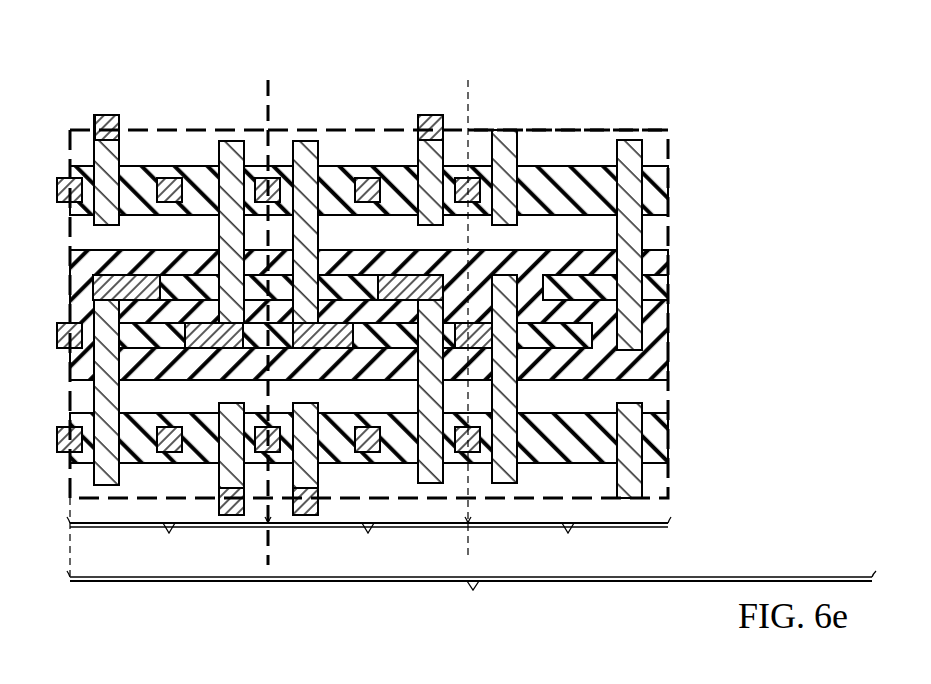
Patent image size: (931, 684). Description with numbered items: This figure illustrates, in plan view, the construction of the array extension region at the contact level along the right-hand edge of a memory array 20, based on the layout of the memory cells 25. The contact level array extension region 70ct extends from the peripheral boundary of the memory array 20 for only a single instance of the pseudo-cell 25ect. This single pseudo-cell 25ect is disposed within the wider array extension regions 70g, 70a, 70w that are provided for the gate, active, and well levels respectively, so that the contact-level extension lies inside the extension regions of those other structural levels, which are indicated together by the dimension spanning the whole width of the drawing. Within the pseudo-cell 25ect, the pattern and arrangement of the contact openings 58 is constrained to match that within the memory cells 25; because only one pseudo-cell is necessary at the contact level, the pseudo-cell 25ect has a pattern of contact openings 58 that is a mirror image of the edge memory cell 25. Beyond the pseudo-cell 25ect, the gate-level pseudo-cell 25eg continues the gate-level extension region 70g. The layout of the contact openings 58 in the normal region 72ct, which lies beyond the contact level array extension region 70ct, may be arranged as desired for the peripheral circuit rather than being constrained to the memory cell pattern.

The contact openings 58 is at (112, 115).
The memory cell 25 is at (185, 124).
The pseudo-cell 25ect is at (354, 124).
The pseudo-cell 25eg is at (569, 128).
The memory array 20 is at (169, 540).
The contact level array extension region 70ct is at (368, 542).
The normal region 72ct is at (568, 542).
The gate level array extension region 70g is at (471, 596).
The active level array extension region 70a is at (471, 599).
The well level array extension region 70w is at (471, 599).